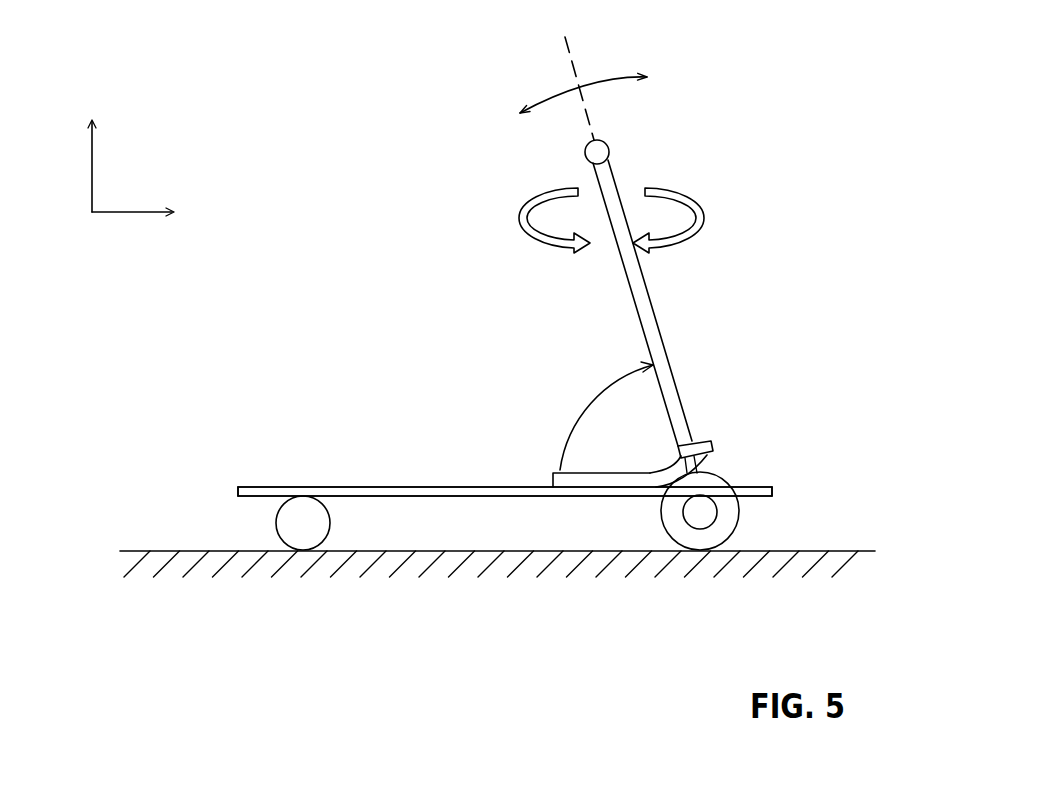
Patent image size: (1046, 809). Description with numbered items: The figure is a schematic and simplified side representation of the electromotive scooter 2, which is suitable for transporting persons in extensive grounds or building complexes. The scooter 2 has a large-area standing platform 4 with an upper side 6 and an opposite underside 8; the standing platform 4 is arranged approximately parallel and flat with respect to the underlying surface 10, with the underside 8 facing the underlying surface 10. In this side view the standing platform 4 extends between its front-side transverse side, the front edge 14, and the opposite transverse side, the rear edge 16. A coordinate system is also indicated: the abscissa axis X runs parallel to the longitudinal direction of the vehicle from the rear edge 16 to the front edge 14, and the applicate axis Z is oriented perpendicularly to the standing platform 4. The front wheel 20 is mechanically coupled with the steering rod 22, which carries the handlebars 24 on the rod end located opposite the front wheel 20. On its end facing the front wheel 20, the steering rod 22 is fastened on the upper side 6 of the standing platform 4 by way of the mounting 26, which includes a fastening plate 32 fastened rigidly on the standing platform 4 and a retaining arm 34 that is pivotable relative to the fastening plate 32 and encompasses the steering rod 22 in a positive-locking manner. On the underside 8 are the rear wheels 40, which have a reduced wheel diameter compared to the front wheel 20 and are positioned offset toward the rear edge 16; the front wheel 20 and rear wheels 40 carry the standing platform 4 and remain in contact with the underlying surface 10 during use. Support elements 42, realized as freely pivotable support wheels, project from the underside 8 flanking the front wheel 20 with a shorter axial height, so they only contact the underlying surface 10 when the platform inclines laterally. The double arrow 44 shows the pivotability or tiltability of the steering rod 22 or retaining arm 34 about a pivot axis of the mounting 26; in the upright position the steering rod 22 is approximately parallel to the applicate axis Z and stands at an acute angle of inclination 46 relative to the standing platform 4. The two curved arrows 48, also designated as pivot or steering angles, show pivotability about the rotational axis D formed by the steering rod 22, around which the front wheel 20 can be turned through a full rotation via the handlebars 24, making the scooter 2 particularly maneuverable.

The electromotive scooter 2 is at (818, 213).
The standing platform 4 is at (490, 493).
The upper side 6 is at (410, 487).
The underside 8 is at (372, 497).
The underlying surface 10 is at (820, 551).
The front-side transverse side 14 is at (784, 497).
The rear transverse side 16 is at (233, 490).
The front wheel 20 is at (722, 527).
The steering rod 22 is at (623, 263).
The handlebars 24 is at (587, 147).
The mounting 26 is at (600, 486).
The fastening plate 32 is at (678, 471).
The retaining arm 34 is at (703, 443).
The rear wheels 40 is at (303, 523).
The support elements 42 is at (696, 516).
The double arrow 44 is at (553, 92).
The angle of inclination 46 is at (587, 413).
The curved arrows 48 is at (537, 197).
The rotational axis D is at (577, 64).
The abscissa axis X is at (130, 214).
The applicate axis Z is at (88, 170).